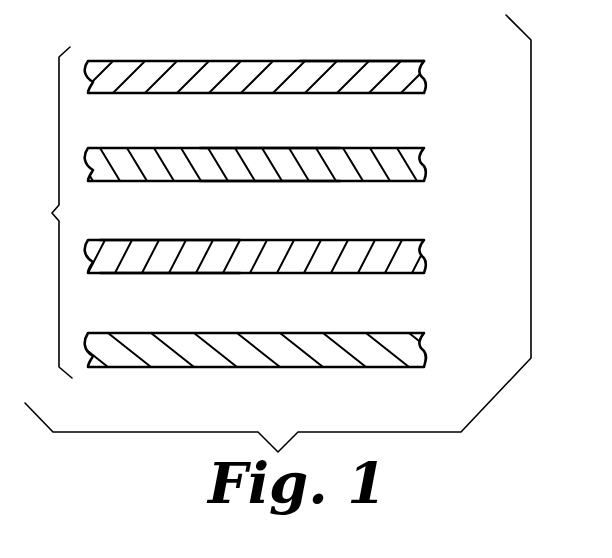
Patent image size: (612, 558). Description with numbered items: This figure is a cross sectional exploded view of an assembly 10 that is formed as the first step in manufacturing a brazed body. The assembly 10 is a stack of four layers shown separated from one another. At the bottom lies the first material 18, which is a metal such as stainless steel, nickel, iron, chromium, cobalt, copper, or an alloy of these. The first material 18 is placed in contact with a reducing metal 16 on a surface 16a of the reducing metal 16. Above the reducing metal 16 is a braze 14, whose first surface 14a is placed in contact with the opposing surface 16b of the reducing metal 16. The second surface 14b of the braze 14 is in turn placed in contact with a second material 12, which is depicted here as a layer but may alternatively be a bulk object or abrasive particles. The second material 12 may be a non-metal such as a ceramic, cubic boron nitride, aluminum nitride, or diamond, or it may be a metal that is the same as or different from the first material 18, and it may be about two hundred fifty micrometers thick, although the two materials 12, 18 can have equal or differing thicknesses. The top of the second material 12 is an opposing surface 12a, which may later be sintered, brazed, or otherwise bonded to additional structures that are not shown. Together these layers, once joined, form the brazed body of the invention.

The assembly 10 is at (44, 212).
The second material 12 is at (426, 67).
The opposing surface 12a is at (359, 60).
The braze 14 is at (426, 157).
The first surface 14a is at (255, 181).
The second surface 14b is at (270, 148).
The reducing metal 16 is at (426, 248).
The surface 16a is at (142, 273).
The opposing surface 16b is at (153, 240).
The first material 18 is at (424, 345).